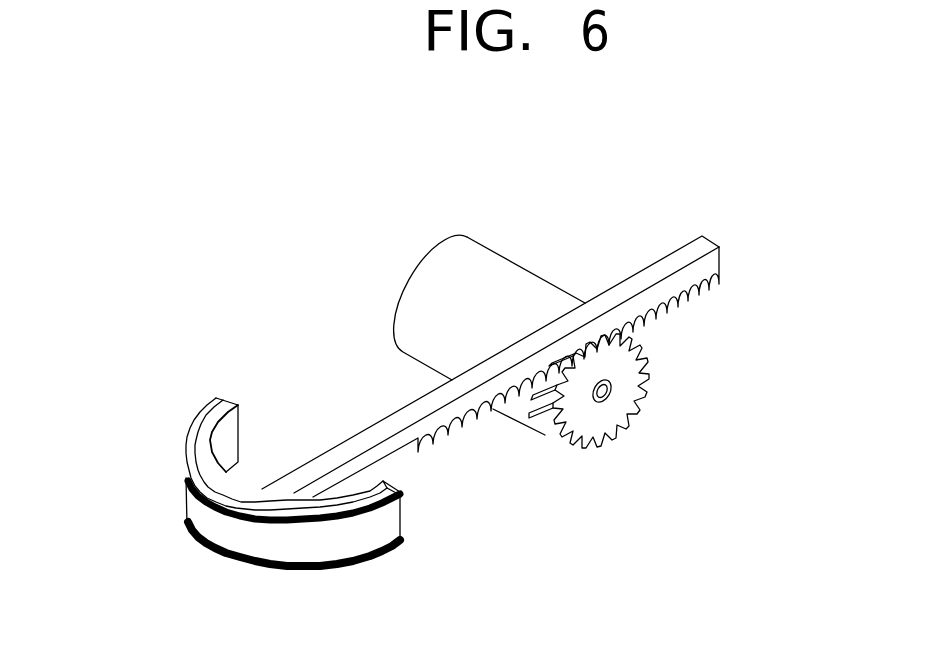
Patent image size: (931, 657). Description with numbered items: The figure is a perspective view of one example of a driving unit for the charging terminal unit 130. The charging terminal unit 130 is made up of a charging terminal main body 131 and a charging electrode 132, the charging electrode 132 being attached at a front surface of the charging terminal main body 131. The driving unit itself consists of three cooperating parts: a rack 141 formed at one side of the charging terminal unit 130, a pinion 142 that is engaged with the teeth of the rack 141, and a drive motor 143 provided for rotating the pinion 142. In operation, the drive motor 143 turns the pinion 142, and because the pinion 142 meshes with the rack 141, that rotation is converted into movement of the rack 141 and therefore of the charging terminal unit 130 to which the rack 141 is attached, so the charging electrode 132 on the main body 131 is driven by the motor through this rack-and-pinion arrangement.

The charging terminal unit 130 is at (218, 305).
The charging terminal main body 131 is at (223, 398).
The charging electrode 132 is at (190, 427).
The rack 141 is at (657, 318).
The pinion 142 is at (597, 423).
The drive motor 143 is at (499, 396).